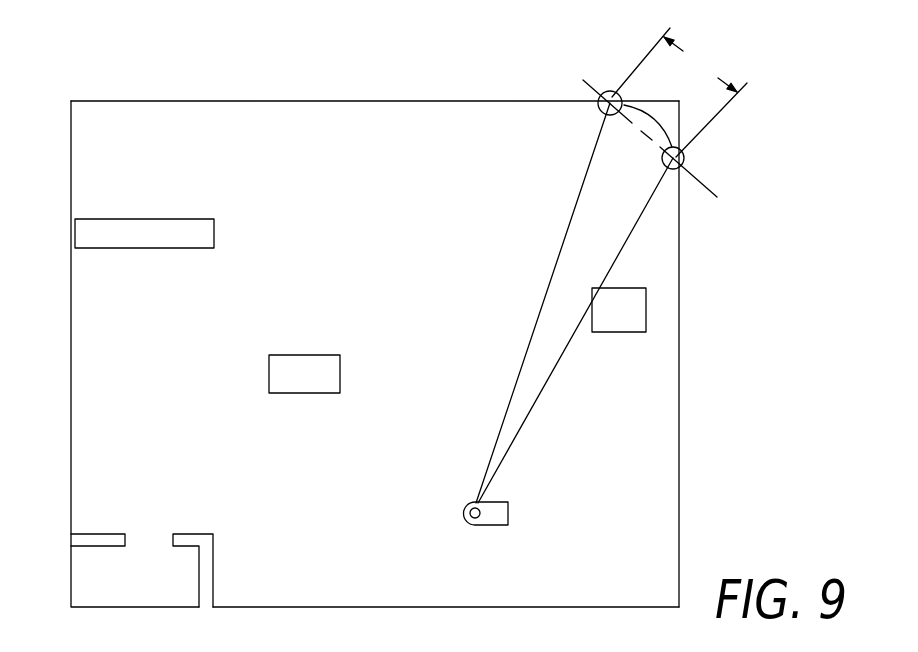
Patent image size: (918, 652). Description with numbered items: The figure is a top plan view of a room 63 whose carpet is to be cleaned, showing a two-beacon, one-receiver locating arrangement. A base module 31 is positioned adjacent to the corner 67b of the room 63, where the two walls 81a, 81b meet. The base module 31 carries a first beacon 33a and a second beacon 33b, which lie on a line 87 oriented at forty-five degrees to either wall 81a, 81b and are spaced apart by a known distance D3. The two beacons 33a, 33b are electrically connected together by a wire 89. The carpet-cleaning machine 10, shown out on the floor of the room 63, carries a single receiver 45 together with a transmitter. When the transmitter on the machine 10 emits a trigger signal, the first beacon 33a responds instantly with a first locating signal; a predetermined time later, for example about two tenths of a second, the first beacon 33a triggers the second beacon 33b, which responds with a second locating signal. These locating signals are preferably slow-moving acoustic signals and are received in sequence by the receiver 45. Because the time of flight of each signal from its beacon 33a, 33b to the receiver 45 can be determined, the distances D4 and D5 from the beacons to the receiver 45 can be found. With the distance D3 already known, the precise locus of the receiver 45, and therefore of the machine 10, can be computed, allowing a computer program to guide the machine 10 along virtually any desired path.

The room 63 is at (48, 157).
The wall 81b is at (295, 101).
The wall 81a is at (680, 310).
The base module 31 is at (605, 80).
The wire 89 is at (658, 122).
The corner 67b is at (670, 109).
The second beacon 33b is at (600, 110).
The first beacon 33a is at (680, 160).
The line 87 is at (697, 185).
The machine 10 is at (545, 245).
The receiver 45 is at (477, 525).
The known distance D3 is at (705, 97).
The distance D4 is at (575, 330).
The distance D5 is at (543, 303).